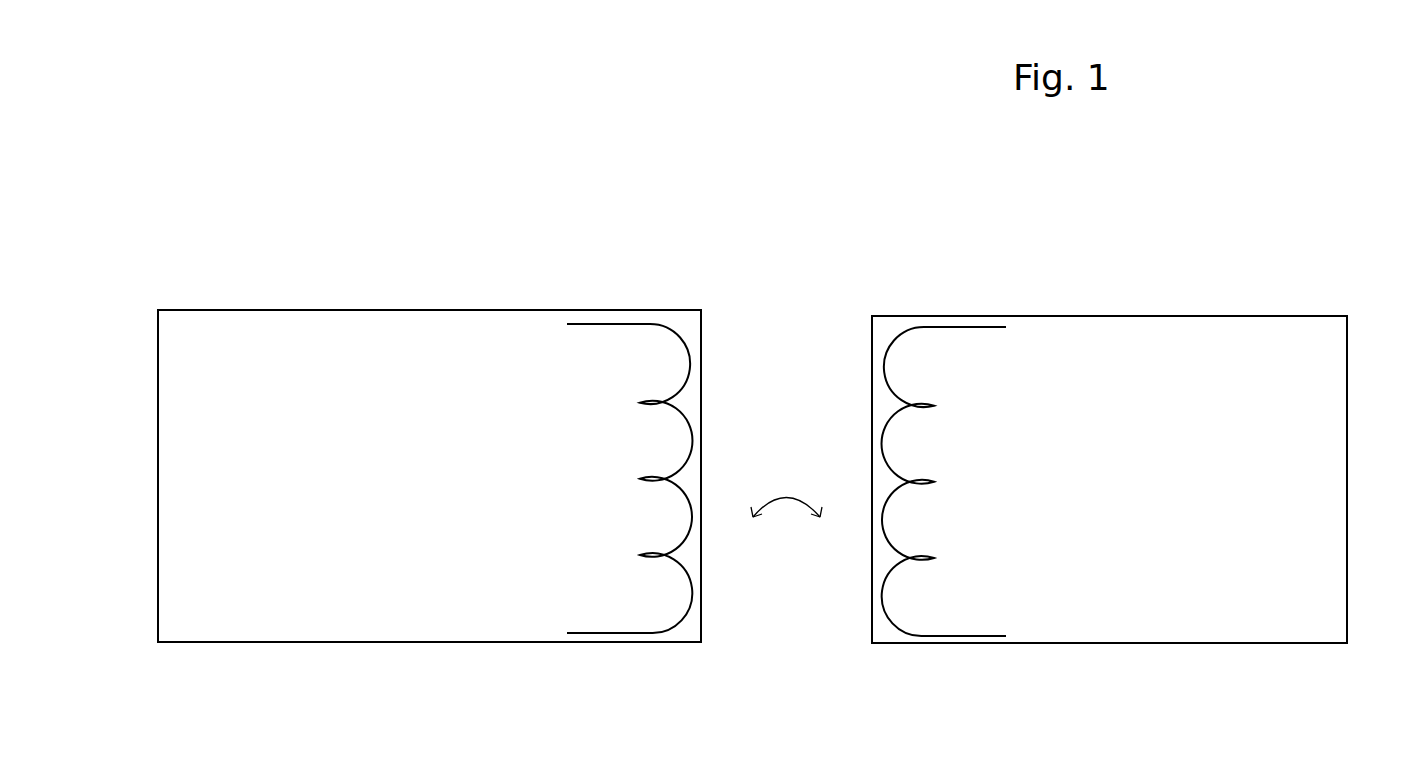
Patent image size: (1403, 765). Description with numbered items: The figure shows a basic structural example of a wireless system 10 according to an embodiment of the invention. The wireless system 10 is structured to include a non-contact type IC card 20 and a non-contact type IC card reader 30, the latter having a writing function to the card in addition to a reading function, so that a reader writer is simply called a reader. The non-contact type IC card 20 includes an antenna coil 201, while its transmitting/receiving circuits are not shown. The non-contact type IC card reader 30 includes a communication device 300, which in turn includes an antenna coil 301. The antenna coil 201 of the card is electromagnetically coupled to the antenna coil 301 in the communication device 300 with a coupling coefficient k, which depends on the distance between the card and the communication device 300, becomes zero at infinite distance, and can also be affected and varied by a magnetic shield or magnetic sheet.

The wireless system 10 is at (806, 157).
The non-contact type IC card 20 is at (963, 305).
The non-contact type IC card reader 30 is at (430, 303).
The antenna coil 201 is at (884, 369).
The antenna coil 301 is at (690, 437).
The communication device 300 is at (426, 644).